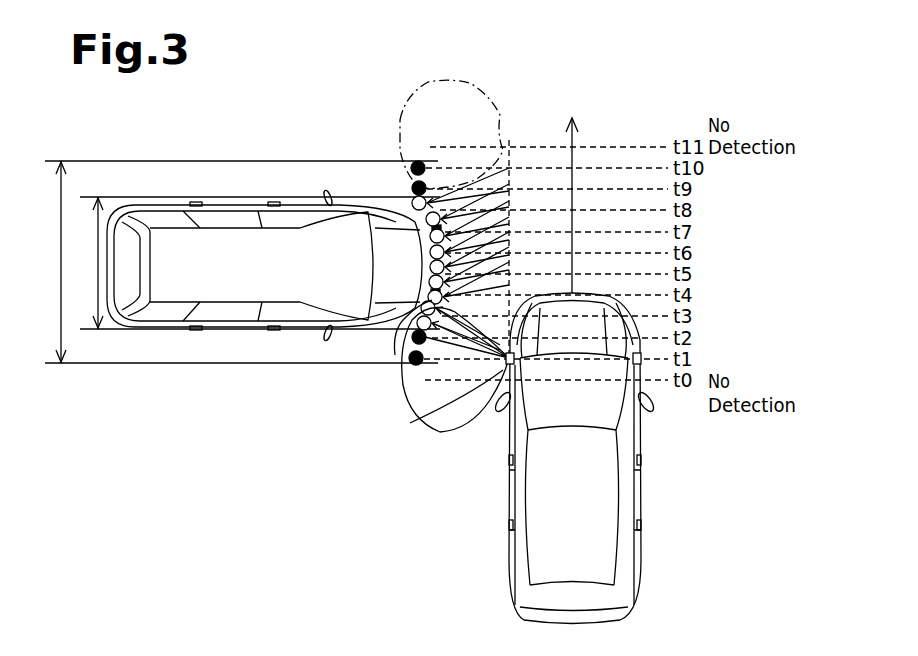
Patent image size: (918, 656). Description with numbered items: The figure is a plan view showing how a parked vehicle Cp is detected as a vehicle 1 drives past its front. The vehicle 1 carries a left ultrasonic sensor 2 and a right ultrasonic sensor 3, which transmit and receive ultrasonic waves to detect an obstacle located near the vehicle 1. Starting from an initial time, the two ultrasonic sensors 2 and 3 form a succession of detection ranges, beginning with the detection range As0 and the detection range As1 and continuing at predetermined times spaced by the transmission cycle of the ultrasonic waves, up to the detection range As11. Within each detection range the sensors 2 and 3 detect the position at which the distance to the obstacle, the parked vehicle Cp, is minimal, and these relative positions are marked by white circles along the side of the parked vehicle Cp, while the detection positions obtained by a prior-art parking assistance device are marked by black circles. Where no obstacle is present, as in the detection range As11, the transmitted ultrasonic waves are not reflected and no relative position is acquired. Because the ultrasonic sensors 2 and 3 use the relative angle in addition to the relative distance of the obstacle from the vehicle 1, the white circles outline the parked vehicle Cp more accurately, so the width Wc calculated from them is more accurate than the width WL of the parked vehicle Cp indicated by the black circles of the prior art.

The vehicle 1 is at (641, 508).
The left ultrasonic sensor 2 is at (503, 385).
The right ultrasonic sensor 3 is at (641, 360).
The parked vehicle Cp is at (234, 205).
The detection range at time t0 As0 is at (415, 425).
The detection range at time t1 As1 is at (404, 336).
The detection range at time t11 As11 is at (398, 120).
The width of the parked vehicle measured by the prior art WL is at (234, 262).
The width of the parked vehicle Wc is at (253, 263).